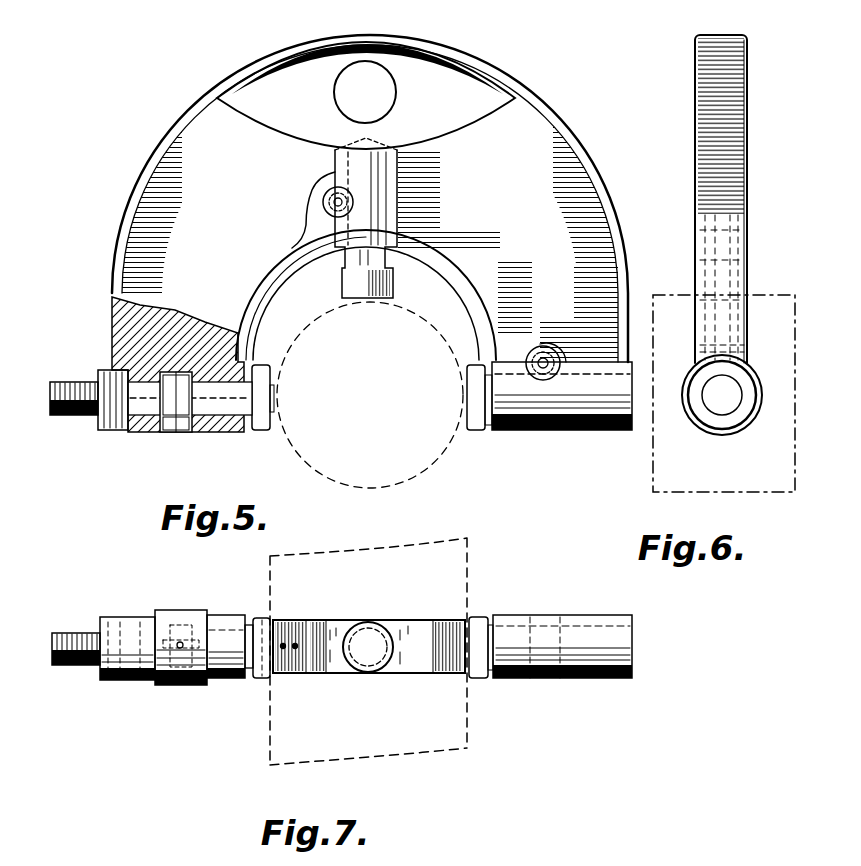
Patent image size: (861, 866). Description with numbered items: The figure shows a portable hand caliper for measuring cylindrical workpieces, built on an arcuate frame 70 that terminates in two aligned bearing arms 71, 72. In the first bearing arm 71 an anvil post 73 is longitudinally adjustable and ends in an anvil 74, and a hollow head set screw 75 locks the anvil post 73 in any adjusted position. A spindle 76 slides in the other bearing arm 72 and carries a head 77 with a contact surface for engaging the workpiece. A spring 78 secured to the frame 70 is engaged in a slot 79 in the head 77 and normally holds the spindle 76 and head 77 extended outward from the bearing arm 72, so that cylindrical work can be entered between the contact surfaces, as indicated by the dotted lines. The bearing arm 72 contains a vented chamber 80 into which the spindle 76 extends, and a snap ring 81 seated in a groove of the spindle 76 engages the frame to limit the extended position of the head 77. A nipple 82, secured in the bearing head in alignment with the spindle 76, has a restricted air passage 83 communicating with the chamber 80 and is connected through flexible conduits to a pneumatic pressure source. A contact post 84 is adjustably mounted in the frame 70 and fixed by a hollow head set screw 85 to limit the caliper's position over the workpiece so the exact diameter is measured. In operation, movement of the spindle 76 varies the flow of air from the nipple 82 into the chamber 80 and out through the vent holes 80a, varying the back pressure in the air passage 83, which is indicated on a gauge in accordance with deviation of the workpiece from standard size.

In FIG. 5, the arcuate frame 70 is at (545, 118).
In FIG. 6, the arcuate frame 70 is at (747, 68).
In FIG. 5, the bearing arm 71 is at (570, 430).
In FIG. 6, the bearing arm 71 is at (757, 414).
In FIG. 7, the bearing arm 71 is at (577, 620).
In FIG. 5, the bearing arm 72 is at (203, 433).
In FIG. 7, the bearing arm 72 is at (224, 618).
In FIG. 5, the anvil post 73 is at (487, 430).
In FIG. 6, the anvil post 73 is at (730, 402).
In FIG. 7, the anvil post 73 is at (493, 620).
In FIG. 5, the anvil 74 is at (473, 363).
In FIG. 7, the anvil 74 is at (478, 617).
In FIG. 5, the hollow head set screw 75 is at (545, 358).
In FIG. 6, the hollow head set screw 75 is at (748, 352).
In FIG. 7, the hollow head set screw 75 is at (545, 620).
In FIG. 5, the spindle 76 is at (248, 430).
In FIG. 7, the spindle 76 is at (260, 618).
In FIG. 5, the head 77 is at (273, 412).
In FIG. 7, the head 77 is at (256, 680).
In FIG. 5, the spring 78 is at (260, 320).
In FIG. 7, the spring 78 is at (290, 664).
In FIG. 5, the slot 79 is at (274, 350).
In FIG. 5, the vented chamber 80 is at (165, 420).
In FIG. 7, the vented chamber 80 is at (188, 612).
In FIG. 5, the vent holes 80a is at (173, 428).
In FIG. 7, the vent holes 80a is at (170, 614).
In FIG. 5, the snap ring 81 is at (187, 372).
In FIG. 7, the snap ring 81 is at (162, 685).
In FIG. 5, the nipple 82 is at (97, 418).
In FIG. 7, the nipple 82 is at (80, 633).
In FIG. 5, the restricted air passage 83 is at (120, 430).
In FIG. 7, the restricted air passage 83 is at (120, 680).
In FIG. 5, the contact post 84 is at (395, 262).
In FIG. 5, the hollow head set screw 85 is at (333, 200).